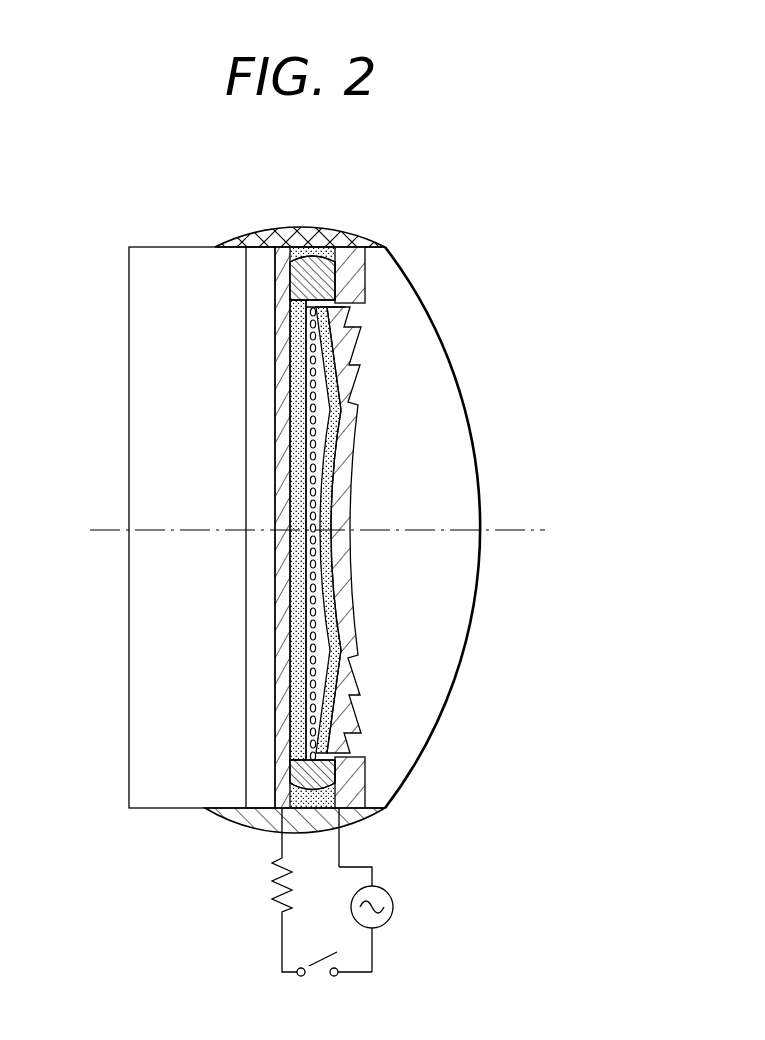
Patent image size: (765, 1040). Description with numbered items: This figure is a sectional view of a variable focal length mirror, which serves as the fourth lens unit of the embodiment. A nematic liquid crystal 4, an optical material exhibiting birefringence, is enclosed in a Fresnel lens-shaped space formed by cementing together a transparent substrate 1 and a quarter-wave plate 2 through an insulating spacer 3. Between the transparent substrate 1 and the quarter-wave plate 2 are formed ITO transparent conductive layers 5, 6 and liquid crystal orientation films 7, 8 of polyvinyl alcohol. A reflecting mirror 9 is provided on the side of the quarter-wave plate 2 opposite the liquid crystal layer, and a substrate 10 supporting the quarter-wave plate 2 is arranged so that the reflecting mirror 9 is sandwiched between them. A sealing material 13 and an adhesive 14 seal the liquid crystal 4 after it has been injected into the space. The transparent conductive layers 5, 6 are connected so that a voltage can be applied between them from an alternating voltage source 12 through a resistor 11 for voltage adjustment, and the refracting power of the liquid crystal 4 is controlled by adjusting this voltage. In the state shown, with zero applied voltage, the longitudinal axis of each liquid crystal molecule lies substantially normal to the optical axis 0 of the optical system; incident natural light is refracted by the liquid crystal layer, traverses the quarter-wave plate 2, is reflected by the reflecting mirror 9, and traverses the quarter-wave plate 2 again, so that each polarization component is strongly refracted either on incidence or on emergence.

The optical axis 0 is at (505, 527).
The transparent substrate 1 is at (415, 283).
The quarter-wave plate 2 is at (282, 252).
The insulating spacer 3 is at (337, 240).
The nematic liquid crystal 4 is at (320, 442).
The ITO transparent conductive layer 5 is at (365, 243).
The ITO transparent conductive layer 6 is at (310, 265).
The liquid crystal orientation film 7 is at (347, 625).
The liquid crystal orientation film 8 is at (293, 625).
The reflecting mirror 9 is at (259, 257).
The substrate 10 is at (178, 262).
The resistor 11 is at (270, 912).
The alternating voltage source 12 is at (393, 925).
The sealing material 13 is at (345, 828).
The adhesive 14 is at (282, 845).